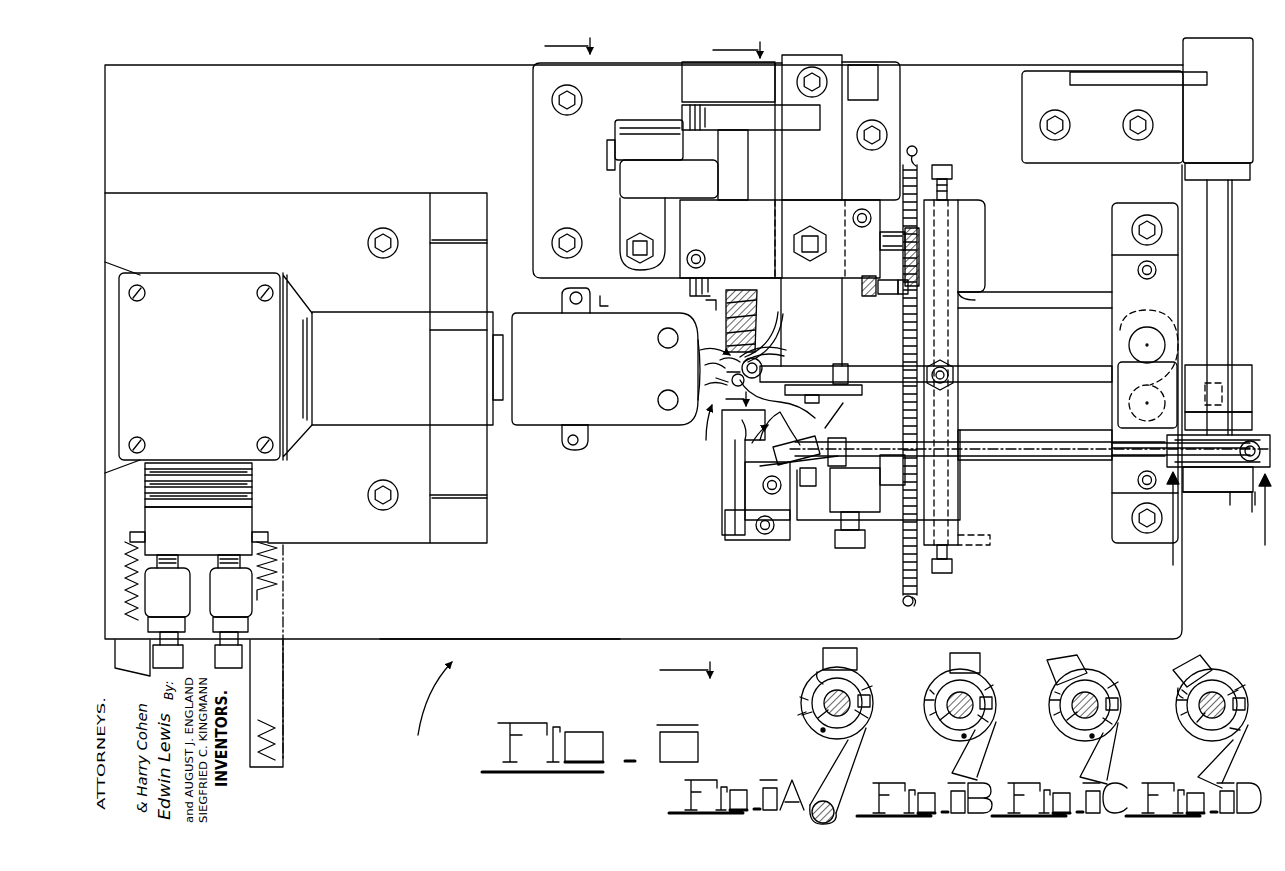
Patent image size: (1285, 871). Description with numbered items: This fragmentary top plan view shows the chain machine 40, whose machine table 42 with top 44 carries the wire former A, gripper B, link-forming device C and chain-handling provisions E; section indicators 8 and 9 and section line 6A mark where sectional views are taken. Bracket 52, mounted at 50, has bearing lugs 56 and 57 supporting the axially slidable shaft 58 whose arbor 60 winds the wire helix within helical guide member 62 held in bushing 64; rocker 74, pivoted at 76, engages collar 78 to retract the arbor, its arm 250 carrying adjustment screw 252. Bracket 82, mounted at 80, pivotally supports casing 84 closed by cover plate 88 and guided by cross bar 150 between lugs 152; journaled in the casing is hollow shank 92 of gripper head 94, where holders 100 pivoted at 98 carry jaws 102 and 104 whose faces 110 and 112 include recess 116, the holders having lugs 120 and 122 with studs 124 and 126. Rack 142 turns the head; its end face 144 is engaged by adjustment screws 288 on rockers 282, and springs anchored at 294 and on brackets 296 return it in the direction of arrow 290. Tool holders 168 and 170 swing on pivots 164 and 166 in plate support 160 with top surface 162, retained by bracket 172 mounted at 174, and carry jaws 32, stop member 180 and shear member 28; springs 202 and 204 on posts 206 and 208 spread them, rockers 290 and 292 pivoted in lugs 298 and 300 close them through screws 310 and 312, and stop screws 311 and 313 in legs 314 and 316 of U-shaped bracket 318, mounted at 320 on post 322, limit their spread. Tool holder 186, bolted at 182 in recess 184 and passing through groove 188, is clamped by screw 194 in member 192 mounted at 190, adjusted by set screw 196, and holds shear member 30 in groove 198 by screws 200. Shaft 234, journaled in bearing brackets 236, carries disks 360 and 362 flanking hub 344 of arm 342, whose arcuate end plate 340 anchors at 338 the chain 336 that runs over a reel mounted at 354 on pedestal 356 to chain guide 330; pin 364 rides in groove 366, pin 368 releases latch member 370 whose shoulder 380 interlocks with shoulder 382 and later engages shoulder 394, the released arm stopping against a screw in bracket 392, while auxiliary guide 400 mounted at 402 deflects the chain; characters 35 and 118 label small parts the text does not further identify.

In FIG. 6, the section line 8- 8 is at (618, 358).
In FIG. 6, the section line 9- 9 is at (727, 224).
In FIG. 6, the curved gripper jaw 28 is at (770, 351).
In FIG. 6, the pivot pin 30 is at (765, 373).
In FIG. 6, the cam surface 32 is at (765, 335).
In FIG. 6, the stop tab 35 is at (838, 438).
In FIG. 6, the machine 40 is at (427, 703).
In FIG. 6, the base plate 42 is at (573, 641).
In FIG. 6, the base plate edge 44 is at (505, 641).
In FIG. 6, the socket head cap screws 50 is at (566, 112).
In FIG. 6, the mounting plate 52 is at (660, 291).
In FIG. 6, the upper block 56 is at (692, 81).
In FIG. 6, the serrated pad 57 is at (688, 288).
In FIG. 6, the vertical slide 58 is at (727, 143).
In FIG. 6, the guide bracket 60 is at (724, 331).
In FIG. 6, the rack teeth 62 is at (727, 300).
In FIG. 6, the jaw carrier block 64 is at (775, 290).
In FIG. 6, the clamp block 74 is at (683, 187).
In FIG. 6, the clamp body 76 is at (609, 160).
In FIG. 6, the cross plate 78 is at (712, 118).
In FIG. 6, the cap screws 80 is at (387, 233).
In FIG. 6, the support block 82 is at (347, 192).
In FIG. 6, the guide rail 84 is at (328, 311).
In FIG. 6, the cover box 88 is at (210, 292).
In FIG. 6, the spacer 92 is at (497, 402).
In FIG. 6, the slide block 94 is at (622, 428).
In FIG. 6, the bores 98 is at (668, 389).
In FIG. 6, the curved face 100 is at (696, 372).
In FIG. 6, the roller 102 is at (744, 384).
In FIG. 6, the link 104 is at (730, 356).
In FIG. 6, the link 110 is at (713, 376).
In FIG. 6, the link 112 is at (710, 358).
In FIG. 6, the pin 116 is at (725, 375).
In FIG. 6, the pin 118 is at (737, 366).
In FIG. 6, the lower lug 120 is at (582, 444).
In FIG. 6, the upper lug 122 is at (588, 299).
In FIG. 6, the pin 124 is at (571, 447).
In FIG. 6, the pin 126 is at (569, 297).
In FIG. 6, the laminated stack 142 is at (254, 489).
In FIG. 6, the adjusting bolts 144 is at (198, 556).
In FIG. 6, the end block 150 is at (478, 270).
In FIG. 6, the end block flanges 152 is at (478, 227).
In FIG. 6, the connecting rod 160 is at (1020, 457).
In FIG. 6, the cross bar 162 is at (883, 380).
In FIG. 6, the bearing block 164 is at (1129, 410).
In FIG. 6, the shaft 166 is at (1129, 346).
In FIG. 6, the rod bracket 168 is at (1004, 455).
In FIG. 6, the tie bar 170 is at (1013, 322).
In FIG. 6, the end bracket 172 is at (1118, 486).
In FIG. 6, the bracket screws 174 is at (1147, 215).
In FIG. 6, the cam follower arm 180 is at (776, 420).
In FIG. 6, the cap screw 182 is at (816, 76).
In FIG. 6, the keyway block 184 is at (850, 100).
In FIG. 6, the upright block 186 is at (828, 186).
In FIG. 6, the hidden slots 188 is at (776, 252).
In FIG. 6, the screws 190 is at (700, 254).
In FIG. 6, the lower block 192 is at (754, 232).
In FIG. 6, the hex nut 194 is at (815, 230).
In FIG. 6, the stop block 196 is at (888, 231).
In FIG. 6, the lower bar 198 is at (852, 391).
In FIG. 6, the lug 200 is at (813, 397).
In FIG. 6, the tension spring 202 is at (902, 562).
In FIG. 6, the knurled nut 204 is at (908, 258).
In FIG. 6, the spring hook 206 is at (913, 604).
In FIG. 6, the spring hook 208 is at (918, 156).
In FIG. 6, the shaft 234 is at (1230, 248).
In FIG. 6A, the shaft 234 is at (850, 697).
In FIG. 6B, the shaft 234 is at (973, 696).
In FIG. 6C, the shaft 234 is at (1098, 696).
In FIG. 6D, the shaft 234 is at (1220, 695).
In FIG. 6, the shaft bracket 236 is at (1188, 148).
In FIG. 6, the clamp arm 250 is at (652, 220).
In FIG. 6, the clamp bolt 252 is at (626, 248).
In FIG. 6, the lock nuts 282 is at (215, 626).
In FIG. 6, the lower nuts 288 is at (178, 660).
In FIG. 6, the pressure block 290 is at (197, 546).
In FIG. 6, the pad 292 is at (880, 282).
In FIG. 6, the guide pins 294 is at (131, 537).
In FIG. 6, the springs 296 is at (289, 755).
In FIG. 6, the bracket 298 is at (812, 511).
In FIG. 6, the stop 300 is at (965, 284).
In FIG. 6, the adjusting screw 310 is at (860, 527).
In FIG. 6, the lock nut 311 is at (950, 562).
In FIG. 6, the pad 312 is at (868, 298).
In FIG. 6, the nut 313 is at (950, 184).
In FIG. 6, the hidden stop 314 is at (970, 543).
In FIG. 6, the slide block 316 is at (968, 208).
In FIG. 6, the slide bar 318 is at (948, 338).
In FIG. 6, the hex nut 320 is at (934, 366).
In FIG. 6, the pivot 322 is at (951, 369).
In FIG. 6, the wedge block 330 is at (805, 447).
In FIG. 6, the link rod 336 is at (890, 458).
In FIG. 6, the link 338 is at (1250, 441).
In FIG. 6, the collar 340 is at (1195, 476).
In FIG. 6A, the key tab 342 is at (850, 660).
In FIG. 6B, the key tab 342 is at (980, 663).
In FIG. 6C, the key tab 342 is at (1080, 660).
In FIG. 6D, the key tab 342 is at (1200, 660).
In FIG. 6, the hub 344 is at (1238, 494).
In FIG. 6A, the hub 344 is at (818, 718).
In FIG. 6B, the hub 344 is at (948, 725).
In FIG. 6C, the hub 344 is at (1078, 725).
In FIG. 6D, the hub 344 is at (1205, 724).
In FIG. 6, the pad 354 is at (809, 487).
In FIG. 6, the block 356 is at (782, 502).
In FIG. 6, the collar 360 is at (1207, 496).
In FIG. 6, the ring 362 is at (1237, 418).
In FIG. 6A, the ring 362 is at (800, 697).
In FIG. 6B, the ring 362 is at (934, 692).
In FIG. 6C, the ring 362 is at (1056, 692).
In FIG. 6D, the ring 362 is at (1182, 690).
In FIG. 6A, the outer ring 364 is at (808, 682).
In FIG. 6B, the outer ring 364 is at (928, 700).
In FIG. 6C, the outer ring 364 is at (1058, 714).
In FIG. 6D, the outer ring 364 is at (1186, 715).
In FIG. 6A, the gap 366 is at (798, 713).
In FIG. 6B, the gap 366 is at (930, 715).
In FIG. 6C, the gap 366 is at (1055, 715).
In FIG. 6D, the gap 366 is at (1182, 715).
In FIG. 6A, the pin 368 is at (822, 733).
In FIG. 6B, the pin 368 is at (963, 740).
In FIG. 6C, the pin 368 is at (1088, 740).
In FIG. 6D, the pin 368 is at (1238, 690).
In FIG. 6, the lever arm 370 is at (1256, 504).
In FIG. 6A, the lever arm 370 is at (860, 757).
In FIG. 6B, the lever arm 370 is at (980, 757).
In FIG. 6C, the lever arm 370 is at (1105, 758).
In FIG. 6D, the lever arm 370 is at (1232, 757).
In FIG. 6A, the key 380 is at (870, 698).
In FIG. 6B, the key 380 is at (992, 702).
In FIG. 6C, the key 380 is at (1120, 704).
In FIG. 6D, the key 380 is at (1245, 712).
In FIG. 6A, the slot 382 is at (866, 716).
In FIG. 6B, the slot 382 is at (985, 720).
In FIG. 6C, the slot 382 is at (1110, 697).
In FIG. 6D, the slot 382 is at (1250, 685).
In FIG. 6, the hidden circle 392 is at (1172, 360).
In FIG. 6A, the notch 394 is at (820, 672).
In FIG. 6D, the notch 394 is at (1180, 688).
In FIG. 6, the lever 400 is at (722, 462).
In FIG. 6, the block 402 is at (775, 545).
In FIG. 6, the section line 6A- 6A is at (1217, 526).
In FIG. 6, the direction A is at (714, 344).
In FIG. 6, the direction B is at (702, 433).
In FIG. 6, the direction C is at (755, 440).
In FIG. 6, the point E is at (839, 409).